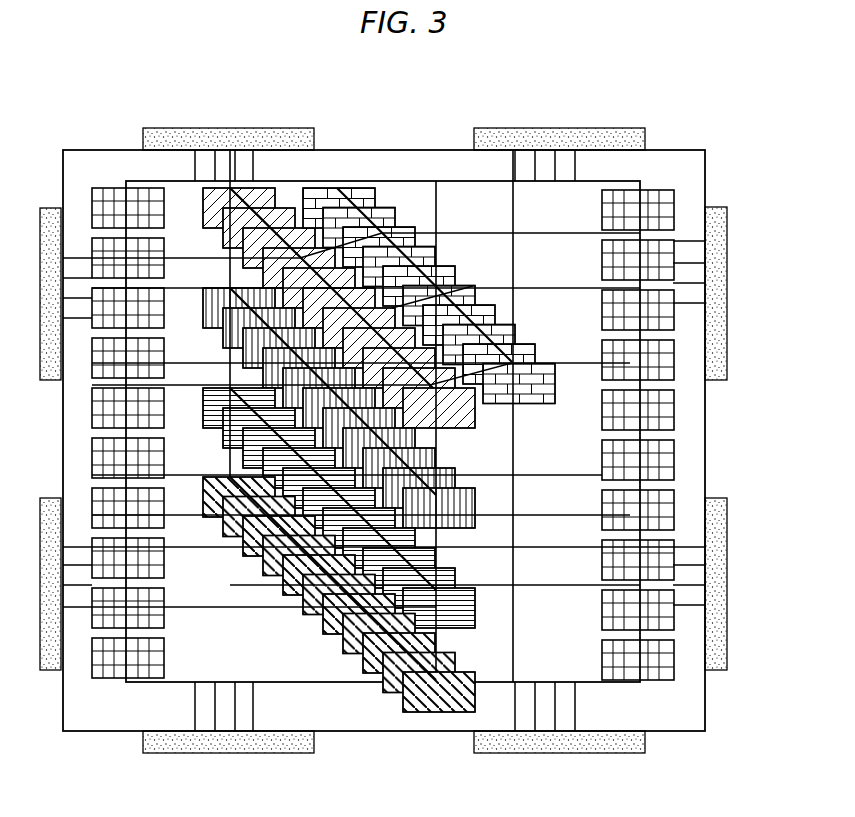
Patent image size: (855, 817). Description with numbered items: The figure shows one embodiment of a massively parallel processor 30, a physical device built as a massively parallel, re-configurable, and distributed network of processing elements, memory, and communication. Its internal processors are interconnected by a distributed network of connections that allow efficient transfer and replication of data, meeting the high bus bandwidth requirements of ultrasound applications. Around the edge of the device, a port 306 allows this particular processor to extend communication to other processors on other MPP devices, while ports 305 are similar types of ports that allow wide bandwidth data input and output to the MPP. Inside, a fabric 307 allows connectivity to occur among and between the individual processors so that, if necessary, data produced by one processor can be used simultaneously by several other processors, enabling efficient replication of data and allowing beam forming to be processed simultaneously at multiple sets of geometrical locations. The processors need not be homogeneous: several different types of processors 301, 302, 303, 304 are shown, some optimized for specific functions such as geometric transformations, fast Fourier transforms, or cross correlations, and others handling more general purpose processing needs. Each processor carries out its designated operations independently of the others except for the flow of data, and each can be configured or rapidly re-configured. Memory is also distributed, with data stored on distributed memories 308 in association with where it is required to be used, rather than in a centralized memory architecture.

The massively parallel processor 30 is at (706, 163).
The processor 301 is at (655, 212).
The processor 302 is at (516, 400).
The processor 303 is at (456, 498).
The processor 304 is at (415, 712).
The ports 305 is at (590, 132).
The port 306 is at (227, 135).
The fabric 307 is at (407, 181).
The distributed memories 308 is at (463, 612).